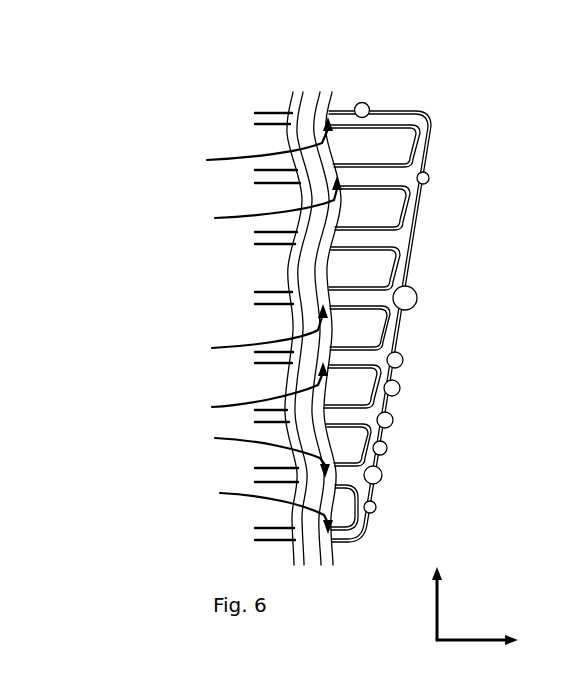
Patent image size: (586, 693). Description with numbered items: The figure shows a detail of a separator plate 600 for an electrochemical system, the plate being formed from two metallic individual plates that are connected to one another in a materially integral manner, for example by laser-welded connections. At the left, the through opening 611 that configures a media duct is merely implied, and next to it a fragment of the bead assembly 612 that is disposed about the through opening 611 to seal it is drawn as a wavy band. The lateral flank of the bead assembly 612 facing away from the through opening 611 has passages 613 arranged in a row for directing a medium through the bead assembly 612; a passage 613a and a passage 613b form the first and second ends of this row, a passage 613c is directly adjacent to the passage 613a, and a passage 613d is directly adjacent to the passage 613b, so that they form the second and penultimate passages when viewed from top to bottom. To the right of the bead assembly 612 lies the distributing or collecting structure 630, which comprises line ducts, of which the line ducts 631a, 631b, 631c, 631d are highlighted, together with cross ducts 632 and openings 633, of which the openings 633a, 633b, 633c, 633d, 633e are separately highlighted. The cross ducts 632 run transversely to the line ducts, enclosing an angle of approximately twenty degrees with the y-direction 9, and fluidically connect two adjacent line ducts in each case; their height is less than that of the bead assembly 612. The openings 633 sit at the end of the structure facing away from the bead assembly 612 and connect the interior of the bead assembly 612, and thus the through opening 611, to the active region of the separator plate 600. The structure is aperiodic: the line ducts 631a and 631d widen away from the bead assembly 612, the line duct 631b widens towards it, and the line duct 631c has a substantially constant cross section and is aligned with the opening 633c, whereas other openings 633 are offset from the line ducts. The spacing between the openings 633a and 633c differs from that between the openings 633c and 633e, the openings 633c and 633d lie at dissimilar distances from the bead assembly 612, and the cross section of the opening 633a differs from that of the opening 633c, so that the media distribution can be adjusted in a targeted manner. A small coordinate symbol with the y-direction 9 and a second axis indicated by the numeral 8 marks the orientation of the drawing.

The separator plate 600 is at (385, 60).
The through opening 611 is at (237, 326).
The bead assembly 612 is at (310, 540).
The passages 613 is at (252, 360).
The passage 613a is at (246, 143).
The passage 613b is at (251, 509).
The passage 613c is at (256, 202).
The passage 613d is at (247, 453).
The distributing or collecting structure 630 is at (478, 472).
The line duct 631a is at (360, 173).
The line duct 631b is at (356, 242).
The line duct 631c is at (358, 298).
The line duct 631d is at (338, 480).
The cross ducts 632 is at (396, 325).
The openings 633 is at (371, 513).
The opening 633a is at (430, 176).
The opening 633b is at (362, 103).
The opening 633c is at (402, 299).
The opening 633d is at (376, 478).
The opening 633e is at (398, 360).
The x axis 8 is at (470, 640).
The y-direction 9 is at (437, 607).